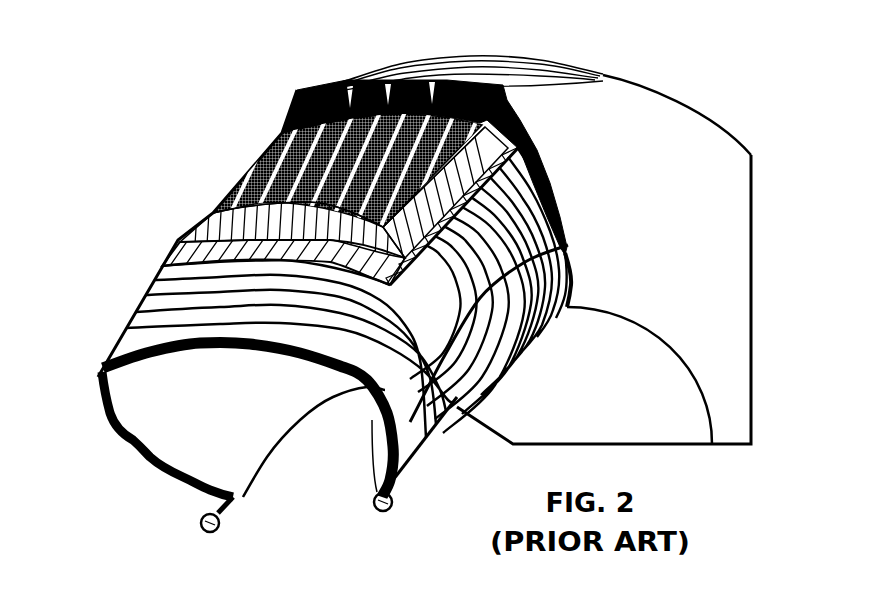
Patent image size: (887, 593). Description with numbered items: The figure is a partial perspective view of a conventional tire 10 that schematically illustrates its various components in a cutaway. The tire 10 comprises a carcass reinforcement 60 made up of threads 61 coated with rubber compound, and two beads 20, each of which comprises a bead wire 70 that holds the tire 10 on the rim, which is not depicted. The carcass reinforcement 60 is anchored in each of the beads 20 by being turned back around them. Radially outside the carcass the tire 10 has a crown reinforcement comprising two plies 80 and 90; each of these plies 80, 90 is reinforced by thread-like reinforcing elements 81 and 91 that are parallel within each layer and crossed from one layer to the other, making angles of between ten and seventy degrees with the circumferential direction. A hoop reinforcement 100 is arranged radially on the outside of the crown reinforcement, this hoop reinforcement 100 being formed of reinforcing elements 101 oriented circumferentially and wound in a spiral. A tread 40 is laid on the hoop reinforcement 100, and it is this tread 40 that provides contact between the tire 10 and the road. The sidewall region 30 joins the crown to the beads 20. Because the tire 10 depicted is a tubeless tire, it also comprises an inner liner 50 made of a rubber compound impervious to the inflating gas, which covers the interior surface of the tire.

The tire 10 is at (702, 51).
The beads 20 is at (362, 470).
The sidewall portion 30 is at (607, 232).
The tread 40 is at (340, 82).
The inner liner 50 is at (219, 406).
The carcass reinforcement 60 is at (62, 250).
The threads 61 is at (160, 258).
The bead wire 70 is at (372, 505).
The ply 80 is at (100, 185).
The reinforcing elements 81 is at (226, 222).
The ply 90 is at (104, 104).
The reinforcing elements 91 is at (262, 190).
The hoop reinforcement 100 is at (142, 87).
The reinforcing elements 101 is at (335, 178).